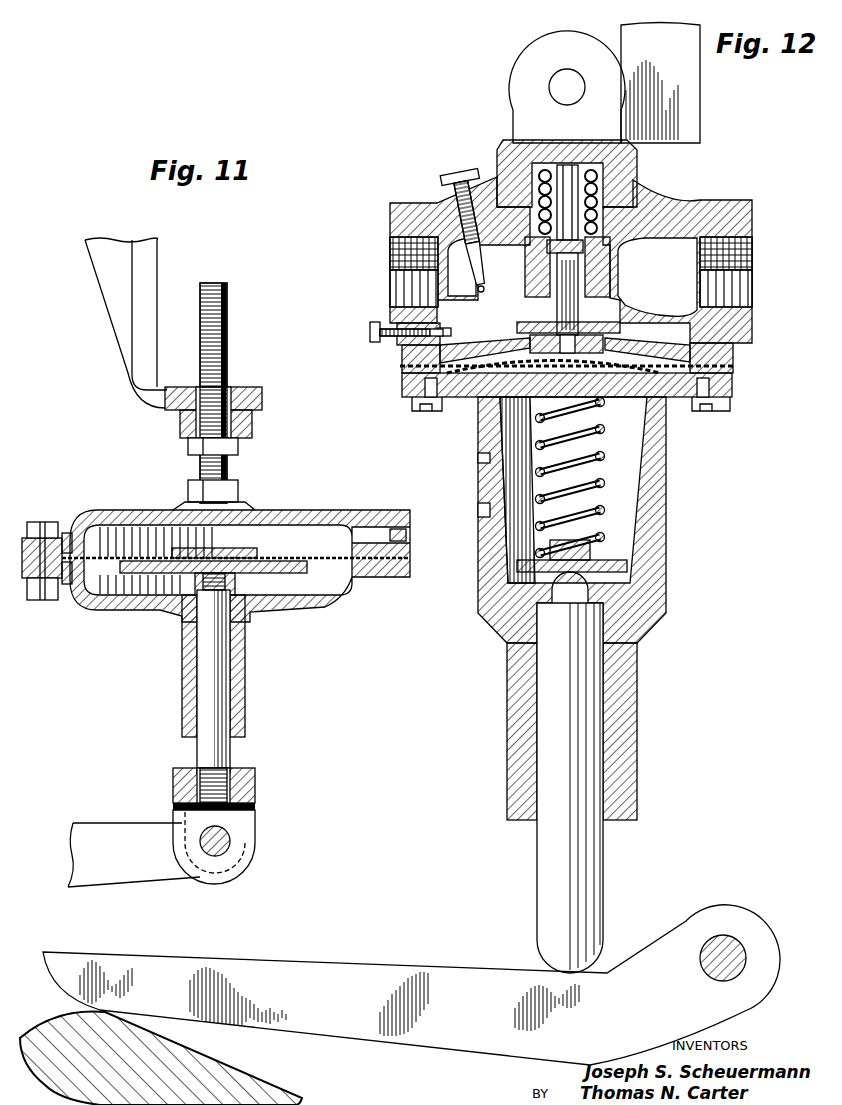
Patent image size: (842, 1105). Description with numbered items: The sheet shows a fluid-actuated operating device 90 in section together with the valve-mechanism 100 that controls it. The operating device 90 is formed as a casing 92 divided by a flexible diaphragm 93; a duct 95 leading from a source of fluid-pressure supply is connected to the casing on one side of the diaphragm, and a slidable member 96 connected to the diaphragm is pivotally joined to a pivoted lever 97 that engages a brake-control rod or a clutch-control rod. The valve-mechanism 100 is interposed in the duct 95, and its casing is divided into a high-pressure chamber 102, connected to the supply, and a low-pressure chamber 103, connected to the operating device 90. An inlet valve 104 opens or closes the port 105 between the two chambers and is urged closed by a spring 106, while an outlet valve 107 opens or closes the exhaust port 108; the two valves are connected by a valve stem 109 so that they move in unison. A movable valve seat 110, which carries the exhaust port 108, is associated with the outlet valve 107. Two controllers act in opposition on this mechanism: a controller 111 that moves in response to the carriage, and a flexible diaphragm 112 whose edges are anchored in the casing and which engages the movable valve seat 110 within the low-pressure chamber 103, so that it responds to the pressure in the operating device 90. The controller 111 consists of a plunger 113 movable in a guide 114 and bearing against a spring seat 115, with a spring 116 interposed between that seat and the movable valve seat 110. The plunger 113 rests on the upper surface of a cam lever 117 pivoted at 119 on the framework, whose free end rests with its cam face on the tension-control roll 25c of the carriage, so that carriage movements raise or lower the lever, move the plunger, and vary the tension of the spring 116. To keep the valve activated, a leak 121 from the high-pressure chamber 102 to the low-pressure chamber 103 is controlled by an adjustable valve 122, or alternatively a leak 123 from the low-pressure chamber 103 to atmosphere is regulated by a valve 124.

In FIG. 11, the fluid-actuated operating device 90 is at (256, 562).
In FIG. 11, the casing 92 is at (306, 611).
In FIG. 11, the flexible diaphragm 93 is at (312, 563).
In FIG. 11, the duct 95 is at (406, 538).
In FIG. 11, the slidable member 96 is at (216, 703).
In FIG. 11, the pivoted lever 97 is at (128, 830).
In FIG. 12, the valve-mechanism 100 is at (551, 498).
In FIG. 12, the high-pressure chamber 102 is at (448, 275).
In FIG. 12, the low-pressure chamber 103 is at (677, 261).
In FIG. 12, the inlet valve 104 is at (622, 196).
In FIG. 12, the port 105 is at (610, 273).
In FIG. 12, the spring 106 is at (605, 172).
In FIG. 12, the outlet valve 107 is at (612, 336).
In FIG. 12, the port or exhaust 108 is at (572, 410).
In FIG. 12, the valve stem 109 is at (560, 305).
In FIG. 12, the movable valve seat 110 is at (722, 366).
In FIG. 12, the controller 111 is at (512, 438).
In FIG. 12, the flexible diaphragm 112 is at (402, 365).
In FIG. 12, the plunger 113 is at (573, 722).
In FIG. 12, the guide 114 is at (623, 790).
In FIG. 12, the spring seat 115 is at (628, 567).
In FIG. 12, the spring 116 is at (537, 485).
In FIG. 12, the cam lever 117 is at (460, 950).
In FIG. 12, the pivot 119 is at (755, 885).
In FIG. 12, the leak 121 is at (481, 287).
In FIG. 12, the adjustable valve 122 is at (470, 216).
In FIG. 12, the leak 123 is at (440, 334).
In FIG. 12, the valve 124 is at (372, 333).
In FIG. 12, the tension-control roll 25c is at (260, 1083).